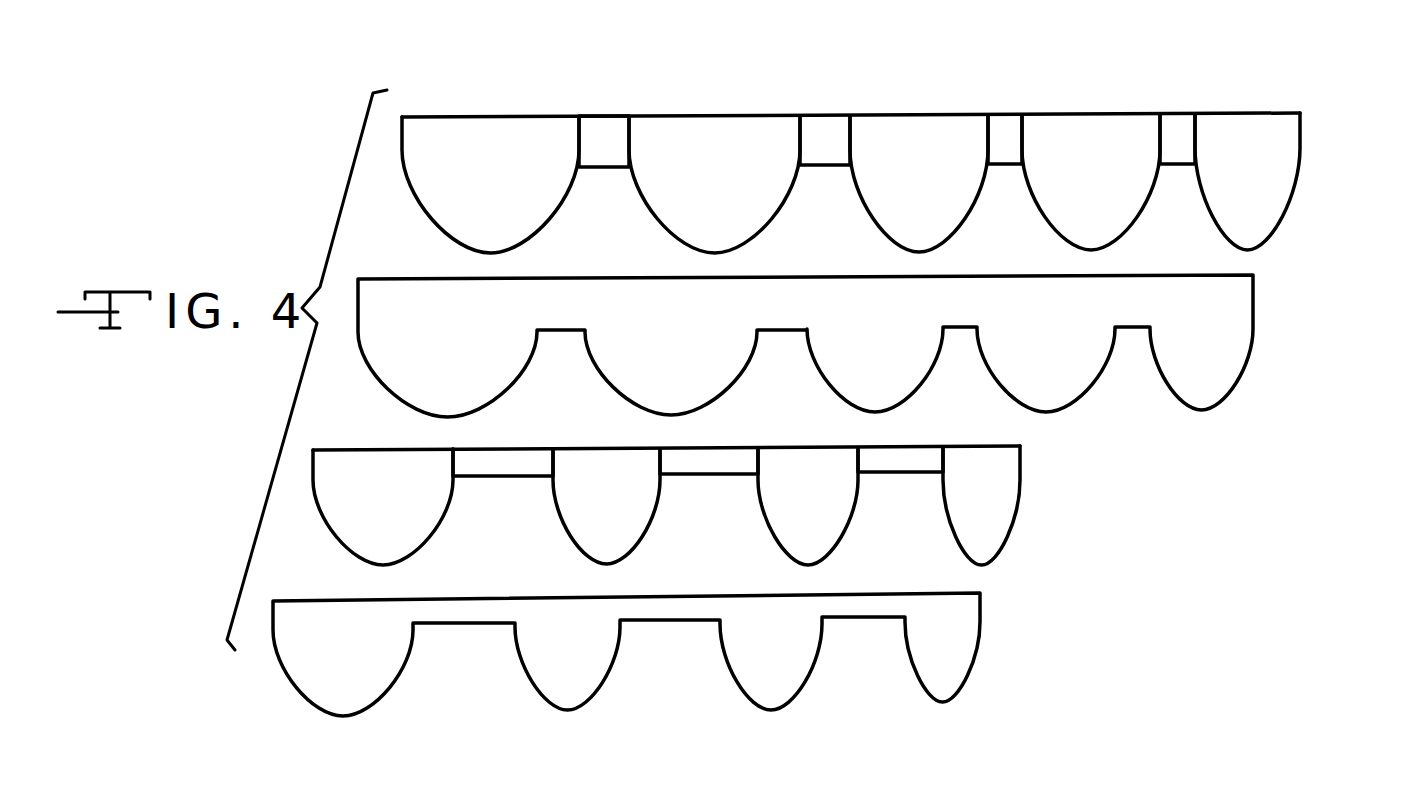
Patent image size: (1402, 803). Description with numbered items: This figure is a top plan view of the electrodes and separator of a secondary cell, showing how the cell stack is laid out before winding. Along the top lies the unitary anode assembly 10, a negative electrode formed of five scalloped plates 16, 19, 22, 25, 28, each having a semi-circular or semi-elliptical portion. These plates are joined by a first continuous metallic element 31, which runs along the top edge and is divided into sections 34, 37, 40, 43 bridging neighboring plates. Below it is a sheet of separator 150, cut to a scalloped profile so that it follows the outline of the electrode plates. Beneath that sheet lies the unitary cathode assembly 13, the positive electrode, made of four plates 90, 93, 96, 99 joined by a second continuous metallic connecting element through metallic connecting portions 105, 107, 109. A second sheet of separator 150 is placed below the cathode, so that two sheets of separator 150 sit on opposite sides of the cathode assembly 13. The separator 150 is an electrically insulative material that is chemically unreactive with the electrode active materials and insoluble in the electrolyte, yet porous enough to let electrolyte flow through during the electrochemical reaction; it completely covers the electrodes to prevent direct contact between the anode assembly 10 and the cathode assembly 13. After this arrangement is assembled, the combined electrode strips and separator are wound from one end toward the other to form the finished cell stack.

The unitary anode assembly 10 is at (902, 136).
The unitary cathode assembly 13 is at (741, 485).
The plate 16 is at (1256, 163).
The plate 19 is at (1098, 154).
The plate 22 is at (920, 154).
The plate 25 is at (726, 157).
The plate 28 is at (496, 152).
The first continuous metallic element 31 is at (631, 97).
The section 34 is at (1178, 122).
The section 37 is at (1000, 128).
The section 40 is at (815, 132).
The section 43 is at (598, 142).
The plate 90 is at (1002, 494).
The plate 93 is at (822, 494).
The plate 96 is at (618, 498).
The plate 99 is at (395, 494).
The metallic connecting portion 105 is at (908, 458).
The metallic connecting portion 107 is at (700, 462).
The metallic connecting portion 109 is at (487, 462).
The separator 150 is at (1237, 310).